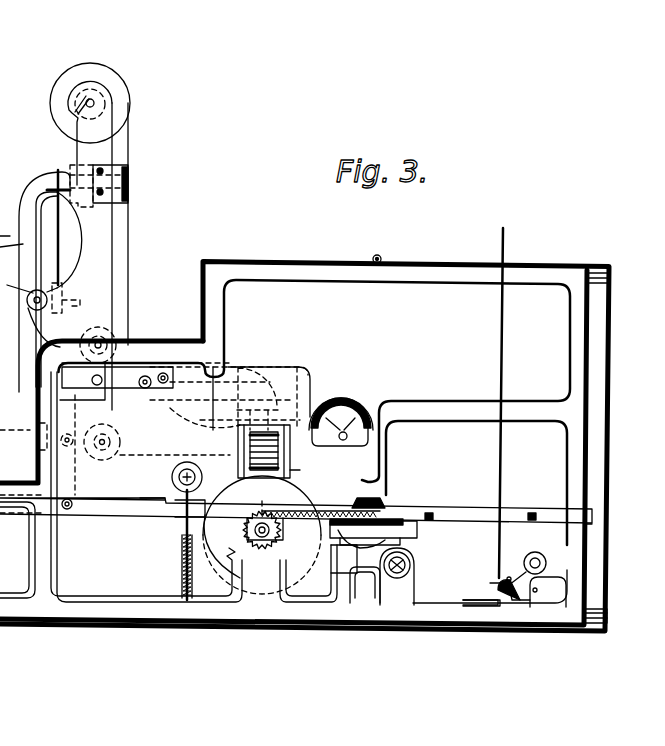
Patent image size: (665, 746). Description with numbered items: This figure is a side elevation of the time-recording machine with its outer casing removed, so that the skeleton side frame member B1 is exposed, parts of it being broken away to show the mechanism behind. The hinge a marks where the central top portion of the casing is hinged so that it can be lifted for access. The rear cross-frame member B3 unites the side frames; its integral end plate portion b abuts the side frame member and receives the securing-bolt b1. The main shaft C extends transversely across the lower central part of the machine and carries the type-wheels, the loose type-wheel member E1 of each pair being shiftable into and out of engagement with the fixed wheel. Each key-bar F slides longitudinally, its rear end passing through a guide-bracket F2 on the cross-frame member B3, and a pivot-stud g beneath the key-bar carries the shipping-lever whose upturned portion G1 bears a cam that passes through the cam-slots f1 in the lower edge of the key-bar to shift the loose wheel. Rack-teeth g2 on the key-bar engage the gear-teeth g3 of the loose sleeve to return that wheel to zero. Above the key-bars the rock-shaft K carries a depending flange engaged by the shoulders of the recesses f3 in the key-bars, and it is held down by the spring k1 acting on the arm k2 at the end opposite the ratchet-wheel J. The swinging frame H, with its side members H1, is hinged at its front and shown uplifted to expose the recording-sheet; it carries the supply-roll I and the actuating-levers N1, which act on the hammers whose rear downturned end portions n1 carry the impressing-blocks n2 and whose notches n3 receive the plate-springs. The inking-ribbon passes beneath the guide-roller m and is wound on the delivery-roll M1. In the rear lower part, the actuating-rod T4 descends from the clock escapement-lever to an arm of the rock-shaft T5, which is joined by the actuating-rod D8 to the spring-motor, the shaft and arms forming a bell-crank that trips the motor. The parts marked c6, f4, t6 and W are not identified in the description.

The side frame member B1 is at (455, 275).
The key-bar F is at (108, 513).
The actuating-rod T4 is at (504, 352).
The hinge a is at (382, 258).
The supply-roll I is at (345, 404).
The actuating-lever N1 is at (127, 373).
The delivery-roll M1 is at (238, 430).
The contact c6 is at (15, 440).
The rock-shaft K is at (172, 483).
The ratchet-wheel J is at (198, 486).
The arm k2 is at (178, 503).
The spring k1 is at (181, 580).
The recess f3 is at (172, 505).
The loose type-wheel member E1 is at (218, 555).
The main shaft C is at (262, 537).
The gear-teeth g3 is at (250, 540).
The pawl f4 is at (241, 524).
The guide-roller m is at (303, 469).
The rack-teeth g2 is at (318, 512).
The guide-bracket F2 is at (381, 494).
The upturned portion of shipping-lever G1 is at (420, 522).
The pivot-stud g is at (358, 551).
The end plate portion b is at (352, 585).
The rear cross-frame member B3 is at (368, 580).
The securing-bolt b1 is at (398, 578).
The cam-slot f1 is at (430, 513).
The rock-shaft T5 is at (530, 558).
The link t6 is at (497, 586).
The actuating-rod D8 is at (474, 607).
The swinging frame H is at (114, 232).
The weight strip W is at (129, 265).
The side member of swinging frame H1 is at (58, 282).
The notch n3 is at (55, 190).
The rear downturned end portion n1 is at (70, 172).
The impressing-block n2 is at (129, 187).